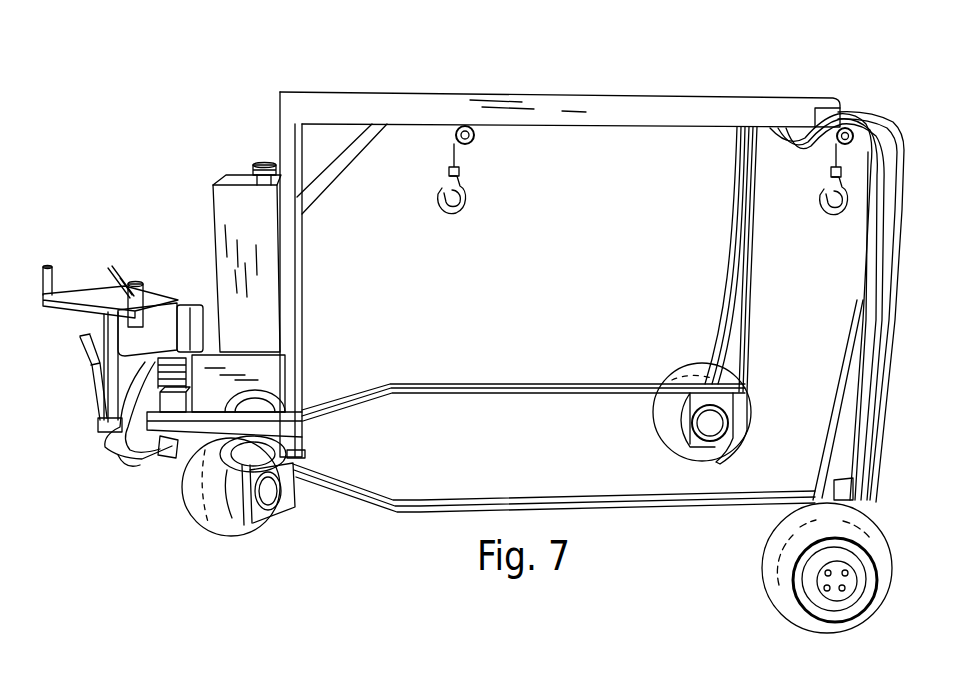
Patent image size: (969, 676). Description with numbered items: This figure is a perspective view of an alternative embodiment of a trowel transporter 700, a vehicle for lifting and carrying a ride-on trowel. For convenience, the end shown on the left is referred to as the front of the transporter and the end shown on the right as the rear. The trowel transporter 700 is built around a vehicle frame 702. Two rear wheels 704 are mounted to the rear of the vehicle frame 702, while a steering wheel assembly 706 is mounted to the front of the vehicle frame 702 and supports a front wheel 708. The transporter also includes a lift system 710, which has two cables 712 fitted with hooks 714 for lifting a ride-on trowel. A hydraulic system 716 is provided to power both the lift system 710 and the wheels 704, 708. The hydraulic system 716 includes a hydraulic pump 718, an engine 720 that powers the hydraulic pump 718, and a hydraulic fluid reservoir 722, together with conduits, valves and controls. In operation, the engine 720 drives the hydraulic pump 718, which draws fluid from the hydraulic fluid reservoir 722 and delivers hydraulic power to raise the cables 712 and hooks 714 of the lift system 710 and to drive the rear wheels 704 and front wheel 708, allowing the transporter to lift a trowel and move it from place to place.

The trowel transporter 700 is at (397, 545).
The vehicle frame 702 is at (888, 278).
The rear wheels 704 is at (657, 425).
The steering wheel assembly 706 is at (155, 463).
The front wheel 708 is at (240, 541).
The lift system 710 is at (623, 82).
The cables 712 is at (453, 148).
The hooks 714 is at (444, 214).
The hydraulic system 716 is at (197, 264).
The hydraulic pump 718 is at (268, 372).
The engine 720 is at (190, 318).
The hydraulic fluid reservoir 722 is at (230, 186).